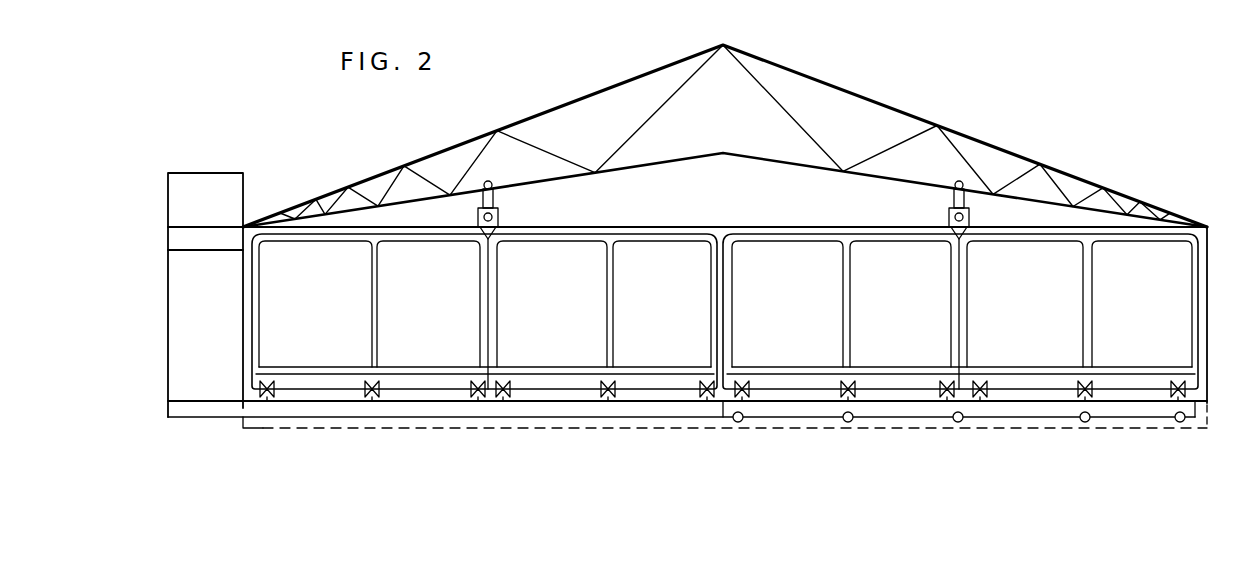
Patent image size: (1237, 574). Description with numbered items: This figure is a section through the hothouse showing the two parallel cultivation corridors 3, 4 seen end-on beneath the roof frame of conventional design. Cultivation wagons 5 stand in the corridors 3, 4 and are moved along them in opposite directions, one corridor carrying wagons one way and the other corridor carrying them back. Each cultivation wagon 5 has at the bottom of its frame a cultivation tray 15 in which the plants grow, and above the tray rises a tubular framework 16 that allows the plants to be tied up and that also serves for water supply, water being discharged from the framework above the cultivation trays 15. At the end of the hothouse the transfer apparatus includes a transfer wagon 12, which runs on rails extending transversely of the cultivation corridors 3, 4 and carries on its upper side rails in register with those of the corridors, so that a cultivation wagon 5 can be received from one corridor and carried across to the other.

The cultivation corridor 3 is at (418, 392).
The cultivation corridor 4 is at (897, 401).
The cultivation wagon 5 is at (725, 431).
The transfer wagon 12 is at (681, 447).
The cultivation tray 15 is at (725, 345).
The tubular framework 16 is at (814, 285).